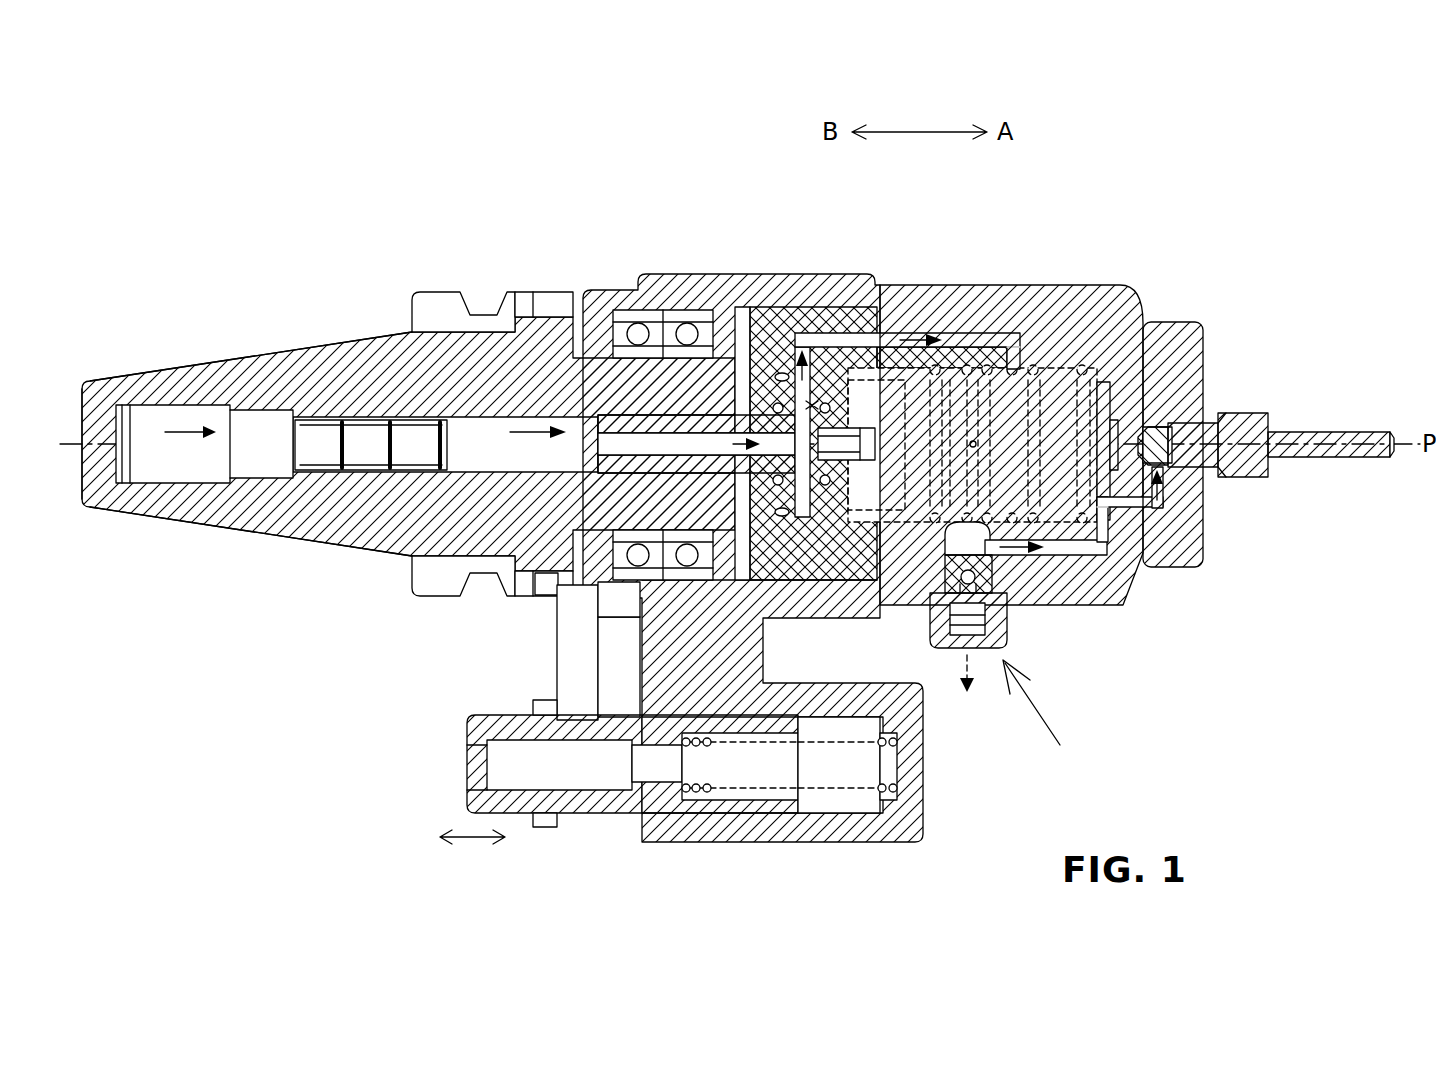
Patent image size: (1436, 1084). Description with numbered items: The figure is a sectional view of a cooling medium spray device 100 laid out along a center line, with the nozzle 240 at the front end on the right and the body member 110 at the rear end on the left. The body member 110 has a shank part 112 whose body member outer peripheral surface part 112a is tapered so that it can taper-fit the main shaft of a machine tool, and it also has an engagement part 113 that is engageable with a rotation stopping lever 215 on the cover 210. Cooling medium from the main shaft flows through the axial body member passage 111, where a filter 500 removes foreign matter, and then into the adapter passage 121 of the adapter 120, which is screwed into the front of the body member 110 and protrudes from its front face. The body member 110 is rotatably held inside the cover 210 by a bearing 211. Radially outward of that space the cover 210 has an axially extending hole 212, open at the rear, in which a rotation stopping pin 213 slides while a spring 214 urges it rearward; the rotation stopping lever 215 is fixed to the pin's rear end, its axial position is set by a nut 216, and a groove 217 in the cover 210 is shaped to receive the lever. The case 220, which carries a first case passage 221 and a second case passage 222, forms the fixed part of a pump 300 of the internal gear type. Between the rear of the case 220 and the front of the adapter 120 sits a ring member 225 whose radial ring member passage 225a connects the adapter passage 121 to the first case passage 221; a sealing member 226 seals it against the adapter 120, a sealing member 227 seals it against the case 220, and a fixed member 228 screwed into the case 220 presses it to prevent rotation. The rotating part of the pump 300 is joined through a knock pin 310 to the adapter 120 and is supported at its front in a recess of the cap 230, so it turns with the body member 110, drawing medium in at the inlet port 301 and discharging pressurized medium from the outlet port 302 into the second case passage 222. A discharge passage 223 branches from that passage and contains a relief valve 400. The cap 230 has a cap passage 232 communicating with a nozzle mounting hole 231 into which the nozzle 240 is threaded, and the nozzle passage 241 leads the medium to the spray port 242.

The cooling medium spray device 100 is at (358, 206).
The body member 110 is at (360, 355).
The body member passage 111 is at (245, 462).
The shank part 112 is at (192, 385).
The body member outer peripheral surface part 112a is at (142, 372).
The engagement part 113 is at (540, 595).
The adapter 120 is at (637, 423).
The adapter passage 121 is at (630, 447).
The filter 500 is at (362, 455).
The cover 210 is at (752, 274).
The bearing 211 is at (640, 318).
The hole 212 is at (842, 805).
The rotation stopping pin 213 is at (617, 800).
The spring 214 is at (732, 795).
The rotation stopping lever 215 is at (575, 663).
The nut 216 is at (543, 827).
The groove 217 is at (620, 617).
The case 220 is at (1035, 290).
The first case passage 221 is at (963, 330).
The second case passage 222 is at (1075, 556).
The discharge passage 223 is at (1000, 605).
The ring member 225 is at (828, 485).
The ring member passage 225a is at (822, 405).
The sealing member 226 is at (782, 517).
The sealing member 227 is at (800, 374).
The fixed member 228 is at (774, 378).
The cap 230 is at (1190, 363).
The nozzle mounting hole 231 is at (1172, 432).
The cap passage 232 is at (1158, 512).
The nozzle 240 is at (1325, 435).
The nozzle passage 241 is at (1297, 450).
The spray port 242 is at (1394, 452).
The pump 300 is at (1100, 333).
The inlet port 301 is at (1015, 366).
The outlet port 302 is at (945, 540).
The knock pin 310 is at (865, 462).
The relief valve 400 is at (1051, 723).